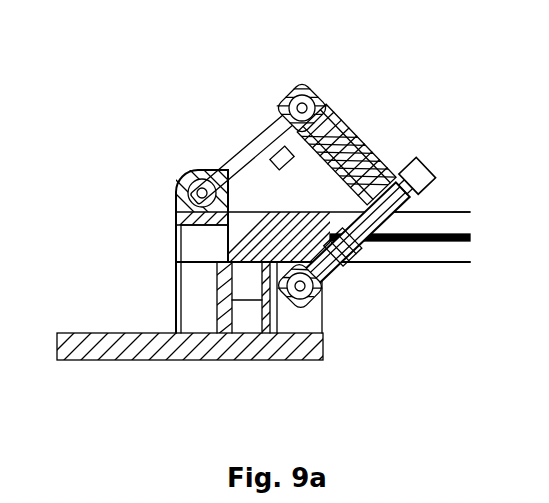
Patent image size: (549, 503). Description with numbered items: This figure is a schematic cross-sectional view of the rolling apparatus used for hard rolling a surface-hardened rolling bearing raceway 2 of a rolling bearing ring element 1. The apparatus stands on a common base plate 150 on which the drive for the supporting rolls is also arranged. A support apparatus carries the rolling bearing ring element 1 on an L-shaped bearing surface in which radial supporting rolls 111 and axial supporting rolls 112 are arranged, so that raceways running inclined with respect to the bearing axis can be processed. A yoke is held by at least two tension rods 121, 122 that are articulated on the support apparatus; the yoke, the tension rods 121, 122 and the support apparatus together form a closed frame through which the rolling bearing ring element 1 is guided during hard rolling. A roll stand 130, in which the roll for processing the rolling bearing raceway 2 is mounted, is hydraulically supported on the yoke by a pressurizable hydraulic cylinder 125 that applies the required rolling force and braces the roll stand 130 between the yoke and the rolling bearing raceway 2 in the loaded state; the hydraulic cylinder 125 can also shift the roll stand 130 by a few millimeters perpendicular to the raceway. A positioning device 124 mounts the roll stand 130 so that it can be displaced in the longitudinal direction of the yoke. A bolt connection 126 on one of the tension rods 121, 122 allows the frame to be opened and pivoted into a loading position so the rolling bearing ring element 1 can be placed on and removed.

The rolling bearing ring element 1 is at (443, 252).
The rolling bearing raceway 2 is at (450, 213).
The radial supporting roll 111 is at (197, 237).
The axial supporting roll 112 is at (248, 303).
The tension rod 121 is at (248, 152).
The tension rod 122 is at (350, 302).
The positioning device 124 is at (345, 130).
The hydraulic cylinder 125 is at (373, 170).
The bolt connection 126 is at (310, 90).
The roll stand 130 is at (353, 260).
The base plate 150 is at (115, 348).